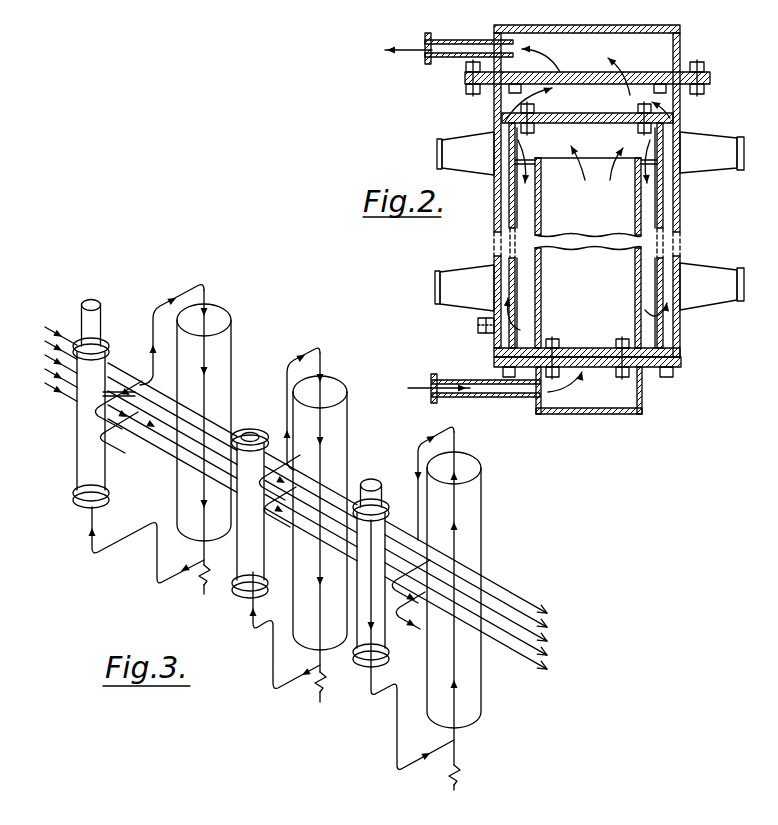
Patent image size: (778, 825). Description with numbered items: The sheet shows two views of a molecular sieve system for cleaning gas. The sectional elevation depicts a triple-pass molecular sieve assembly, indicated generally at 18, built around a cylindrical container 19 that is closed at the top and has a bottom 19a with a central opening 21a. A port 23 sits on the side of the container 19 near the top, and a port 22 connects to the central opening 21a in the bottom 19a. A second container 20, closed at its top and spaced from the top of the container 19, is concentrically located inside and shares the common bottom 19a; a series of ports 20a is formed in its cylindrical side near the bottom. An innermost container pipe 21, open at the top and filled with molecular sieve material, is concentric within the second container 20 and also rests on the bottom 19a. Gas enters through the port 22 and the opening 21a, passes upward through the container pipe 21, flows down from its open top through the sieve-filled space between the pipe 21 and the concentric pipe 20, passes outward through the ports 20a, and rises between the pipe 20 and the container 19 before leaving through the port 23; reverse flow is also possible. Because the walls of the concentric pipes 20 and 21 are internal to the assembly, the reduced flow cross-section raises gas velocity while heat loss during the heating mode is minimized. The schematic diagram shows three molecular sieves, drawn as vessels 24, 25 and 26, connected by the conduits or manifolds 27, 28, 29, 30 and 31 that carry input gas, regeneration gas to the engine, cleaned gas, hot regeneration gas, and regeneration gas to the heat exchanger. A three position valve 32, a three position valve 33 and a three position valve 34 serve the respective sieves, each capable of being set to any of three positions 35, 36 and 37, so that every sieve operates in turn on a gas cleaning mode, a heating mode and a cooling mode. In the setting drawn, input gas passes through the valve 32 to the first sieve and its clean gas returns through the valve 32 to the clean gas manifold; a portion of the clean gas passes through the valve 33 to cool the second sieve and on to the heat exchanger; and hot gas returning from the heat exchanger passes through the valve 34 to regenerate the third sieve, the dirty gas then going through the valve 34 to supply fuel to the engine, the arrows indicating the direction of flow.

In FIG. 2, the heat exchanger shell 18 is at (460, 115).
In FIG. 2, the cylindrical container 19 is at (683, 205).
In FIG. 2, the bottom 19a is at (655, 370).
In FIG. 2, the second container 20 is at (513, 200).
In FIG. 2, the ports 20a is at (513, 336).
In FIG. 2, the container pipe 21 is at (540, 223).
In FIG. 2, the central opening 21a is at (603, 362).
In FIG. 2, the port 22 is at (480, 391).
In FIG. 2, the port 23 is at (470, 46).
In FIG. 3, the first vessel 24 is at (228, 362).
In FIG. 3, the second vessel 25 is at (340, 446).
In FIG. 3, the third vessel 26 is at (476, 513).
In FIG. 3, the first tube 27 is at (491, 581).
In FIG. 3, the second tube 28 is at (516, 608).
In FIG. 3, the third tube 29 is at (527, 633).
In FIG. 3, the fourth tube 30 is at (521, 644).
In FIG. 3, the fifth tube 31 is at (530, 660).
In FIG. 3, the three position valve 32 is at (82, 440).
In FIG. 3, the three position valve 33 is at (242, 573).
In FIG. 3, the three position valve 34 is at (368, 655).
In FIG. 3, the position 35 is at (92, 306).
In FIG. 3, the position 36 is at (248, 432).
In FIG. 3, the position 37 is at (371, 485).